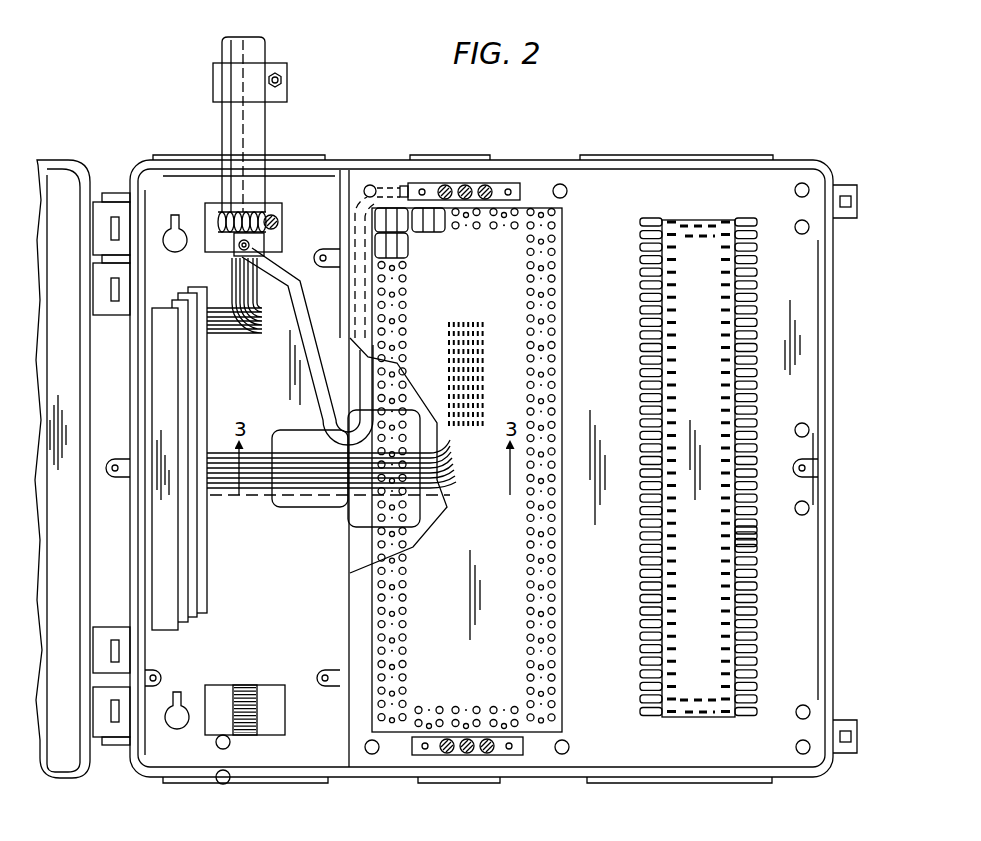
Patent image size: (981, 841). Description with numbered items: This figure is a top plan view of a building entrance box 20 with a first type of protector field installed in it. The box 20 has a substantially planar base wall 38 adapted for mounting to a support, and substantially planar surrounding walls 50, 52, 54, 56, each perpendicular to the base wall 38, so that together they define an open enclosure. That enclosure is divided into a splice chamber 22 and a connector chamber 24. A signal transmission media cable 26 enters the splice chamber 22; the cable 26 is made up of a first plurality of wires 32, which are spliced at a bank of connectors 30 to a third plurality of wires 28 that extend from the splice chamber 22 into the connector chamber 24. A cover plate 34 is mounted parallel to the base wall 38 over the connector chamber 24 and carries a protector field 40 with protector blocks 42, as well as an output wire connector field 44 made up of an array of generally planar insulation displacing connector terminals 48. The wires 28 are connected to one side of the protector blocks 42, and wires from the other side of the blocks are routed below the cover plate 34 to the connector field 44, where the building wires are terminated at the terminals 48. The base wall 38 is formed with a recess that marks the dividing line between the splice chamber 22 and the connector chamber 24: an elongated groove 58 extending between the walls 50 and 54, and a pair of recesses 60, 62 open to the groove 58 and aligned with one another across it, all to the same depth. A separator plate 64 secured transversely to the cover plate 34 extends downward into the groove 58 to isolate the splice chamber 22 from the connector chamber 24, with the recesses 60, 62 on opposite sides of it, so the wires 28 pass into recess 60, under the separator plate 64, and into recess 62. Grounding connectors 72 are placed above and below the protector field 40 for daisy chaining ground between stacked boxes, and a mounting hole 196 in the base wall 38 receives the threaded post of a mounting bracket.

The building entrance box 20 is at (213, 816).
The splice chamber 22 is at (305, 732).
The connector chamber 24 is at (368, 549).
The signal transmission media cable 26 is at (265, 124).
The wires 28 is at (202, 475).
The bank of connectors 30 is at (196, 621).
The wires 32 is at (231, 338).
The cover plate 34 is at (614, 235).
The base wall 38 is at (327, 227).
The protector field 40 is at (562, 708).
The protector blocks 42 is at (397, 228).
The output wire connector field 44 is at (707, 637).
The insulation displacing connector terminals 48 is at (725, 530).
The surrounding wall 50 is at (637, 158).
The surrounding wall 52 is at (826, 462).
The surrounding wall 54 is at (556, 785).
The surrounding wall 56 is at (138, 592).
The elongated groove 58 is at (346, 572).
The recess 60 is at (312, 506).
The recess 62 is at (360, 516).
The separator plate 64 is at (345, 633).
The grounding connectors 72 is at (517, 194).
The mounting hole 196 is at (174, 222).